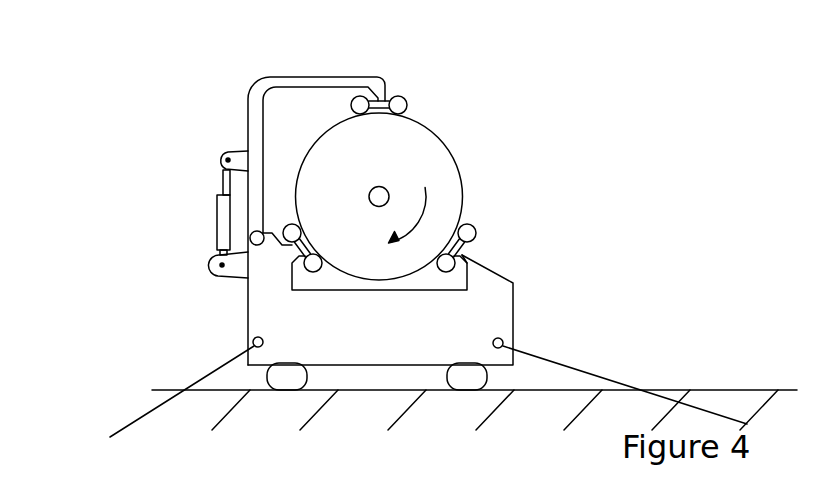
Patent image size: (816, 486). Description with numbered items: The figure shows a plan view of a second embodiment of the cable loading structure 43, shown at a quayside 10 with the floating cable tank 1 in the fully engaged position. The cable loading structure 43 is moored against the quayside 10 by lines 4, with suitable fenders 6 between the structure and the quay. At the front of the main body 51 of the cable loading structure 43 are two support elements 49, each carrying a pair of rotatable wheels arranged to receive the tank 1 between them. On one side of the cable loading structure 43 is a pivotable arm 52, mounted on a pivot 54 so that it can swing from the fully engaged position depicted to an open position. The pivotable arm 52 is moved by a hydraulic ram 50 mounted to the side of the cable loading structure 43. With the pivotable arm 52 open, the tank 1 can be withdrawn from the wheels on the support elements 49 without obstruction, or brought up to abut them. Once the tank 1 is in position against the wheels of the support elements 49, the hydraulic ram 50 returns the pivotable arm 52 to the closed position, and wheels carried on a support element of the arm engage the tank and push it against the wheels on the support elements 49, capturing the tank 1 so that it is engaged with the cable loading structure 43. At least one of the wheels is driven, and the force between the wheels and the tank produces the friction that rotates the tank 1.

The floating cable tank 1 is at (458, 165).
The lines 4 is at (202, 375).
The fenders 6 is at (270, 391).
The quayside 10 is at (747, 390).
The cable loading structure 43 is at (513, 322).
The support elements 49 is at (301, 266).
The hydraulic ram 50 is at (217, 207).
The main body 51 is at (474, 307).
The pivotable arm 52 is at (312, 81).
The pivot 54 is at (250, 241).